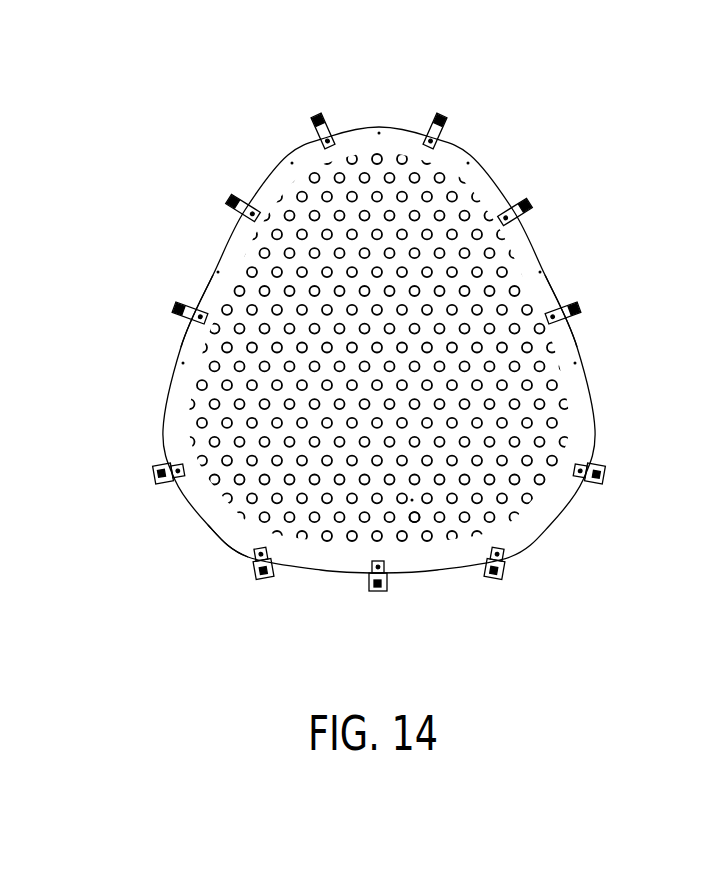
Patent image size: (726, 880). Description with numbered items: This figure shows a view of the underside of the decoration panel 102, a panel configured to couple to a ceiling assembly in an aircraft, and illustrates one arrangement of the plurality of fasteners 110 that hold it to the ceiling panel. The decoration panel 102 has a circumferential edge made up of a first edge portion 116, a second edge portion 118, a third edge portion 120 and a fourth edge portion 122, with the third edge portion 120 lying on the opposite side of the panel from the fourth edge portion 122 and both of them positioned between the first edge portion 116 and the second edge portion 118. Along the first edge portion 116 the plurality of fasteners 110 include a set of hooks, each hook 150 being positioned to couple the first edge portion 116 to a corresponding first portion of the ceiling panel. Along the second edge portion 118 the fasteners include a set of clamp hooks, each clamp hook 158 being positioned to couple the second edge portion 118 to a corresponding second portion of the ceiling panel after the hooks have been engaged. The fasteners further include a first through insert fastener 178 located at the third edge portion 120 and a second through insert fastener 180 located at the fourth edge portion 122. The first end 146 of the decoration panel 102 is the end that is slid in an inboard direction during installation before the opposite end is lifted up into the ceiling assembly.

The plurality of fasteners 110 is at (210, 108).
The decoration panel 102 is at (548, 357).
The first edge portion 116 is at (288, 196).
The second edge portion 118 is at (206, 515).
The third edge portion 120 is at (198, 334).
The fourth edge portion 122 is at (560, 334).
The first end 146 is at (416, 522).
The hook 150 is at (238, 205).
The clamp hook 158 is at (156, 466).
The first through insert fastener 178 is at (180, 306).
The second through insert fastener 180 is at (570, 306).